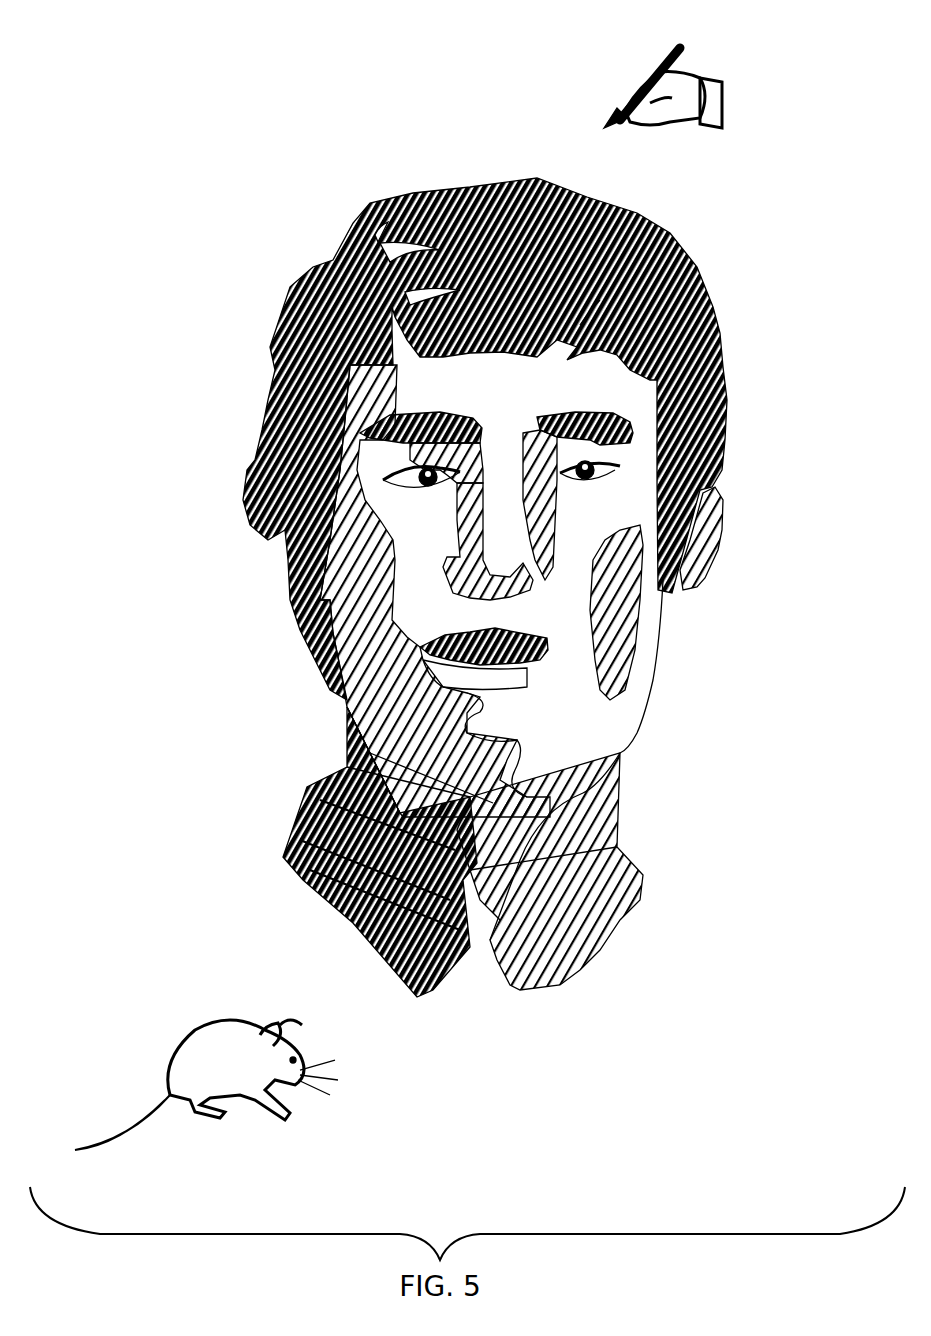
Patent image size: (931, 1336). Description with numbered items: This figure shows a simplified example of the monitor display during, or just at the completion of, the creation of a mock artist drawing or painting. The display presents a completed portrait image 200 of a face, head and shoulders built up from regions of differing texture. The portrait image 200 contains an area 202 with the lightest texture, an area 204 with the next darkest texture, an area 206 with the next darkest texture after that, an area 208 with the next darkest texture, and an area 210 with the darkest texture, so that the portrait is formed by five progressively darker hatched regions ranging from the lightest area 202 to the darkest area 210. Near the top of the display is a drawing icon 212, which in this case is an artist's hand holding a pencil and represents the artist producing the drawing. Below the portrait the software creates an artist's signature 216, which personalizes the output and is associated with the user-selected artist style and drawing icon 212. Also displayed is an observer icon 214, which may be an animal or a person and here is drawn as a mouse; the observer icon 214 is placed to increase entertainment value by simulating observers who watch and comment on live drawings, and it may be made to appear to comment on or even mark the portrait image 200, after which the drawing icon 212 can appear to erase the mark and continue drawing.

The completed portrait image 200 is at (256, 290).
The area with the lightest texture 202 is at (637, 690).
The area with the next darkest texture 204 is at (603, 807).
The area with the next darkest texture 206 is at (340, 674).
The area with the next darkest texture 208 is at (457, 533).
The area with the darkest texture 210 is at (660, 235).
The drawing icon 212 is at (700, 70).
The observer icon 214 is at (218, 1023).
The artist's signature 216 is at (710, 992).